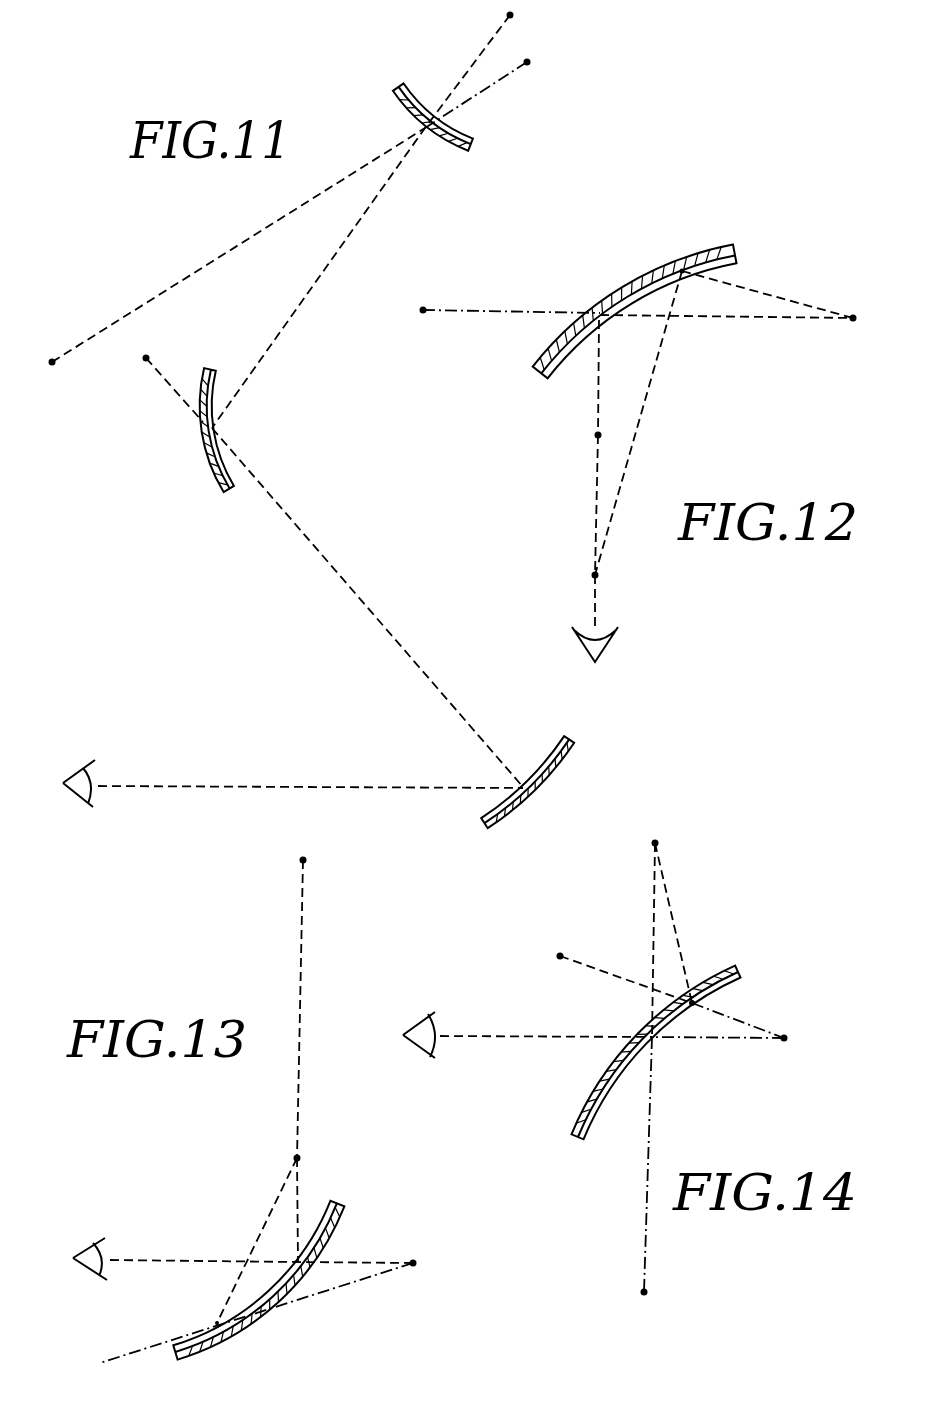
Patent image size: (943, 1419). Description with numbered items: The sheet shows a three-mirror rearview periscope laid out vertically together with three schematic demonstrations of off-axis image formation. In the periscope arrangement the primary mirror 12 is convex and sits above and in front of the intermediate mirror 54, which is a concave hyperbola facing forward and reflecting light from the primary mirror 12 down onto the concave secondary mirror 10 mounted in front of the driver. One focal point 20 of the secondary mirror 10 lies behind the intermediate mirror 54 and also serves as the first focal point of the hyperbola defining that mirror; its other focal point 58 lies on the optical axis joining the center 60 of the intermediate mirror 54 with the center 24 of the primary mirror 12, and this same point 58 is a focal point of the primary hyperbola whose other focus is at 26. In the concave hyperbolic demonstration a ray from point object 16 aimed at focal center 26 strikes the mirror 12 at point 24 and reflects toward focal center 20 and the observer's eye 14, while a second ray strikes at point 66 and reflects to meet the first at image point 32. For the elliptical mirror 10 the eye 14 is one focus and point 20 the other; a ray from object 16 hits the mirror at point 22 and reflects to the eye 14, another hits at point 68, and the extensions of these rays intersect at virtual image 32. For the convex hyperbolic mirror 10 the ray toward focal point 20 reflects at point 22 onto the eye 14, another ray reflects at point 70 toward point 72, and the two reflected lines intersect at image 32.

In FIG. 11, the secondary mirror 10 is at (558, 773).
In FIG. 13, the secondary mirror 10 is at (325, 1235).
In FIG. 14, the secondary mirror 10 is at (598, 1097).
In FIG. 11, the primary mirror 12 is at (470, 148).
In FIG. 12, the primary mirror 12 is at (542, 375).
In FIG. 11, the observer's eye 14 is at (63, 782).
In FIG. 12, the observer's eye 14 is at (603, 647).
In FIG. 13, the observer's eye 14 is at (75, 1257).
In FIG. 14, the observer's eye 14 is at (415, 1028).
In FIG. 11, the point object 16 is at (52, 362).
In FIG. 12, the point object 16 is at (847, 294).
In FIG. 13, the point object 16 is at (297, 1158).
In FIG. 14, the point object 16 is at (655, 843).
In FIG. 11, the focal point 20 is at (146, 358).
In FIG. 12, the focal point 20 is at (598, 435).
In FIG. 13, the focal point 20 is at (303, 860).
In FIG. 14, the focal point 20 is at (644, 1292).
In FIG. 11, the intersecting point 22 is at (518, 783).
In FIG. 13, the intersecting point 22 is at (302, 1265).
In FIG. 14, the intersecting point 22 is at (652, 1038).
In FIG. 11, the center of primary mirror 24 is at (420, 127).
In FIG. 12, the center of primary mirror 24 is at (600, 316).
In FIG. 11, the focal center 26 is at (527, 62).
In FIG. 12, the focal center 26 is at (423, 310).
In FIG. 12, the image point 32 is at (595, 576).
In FIG. 13, the image point 32 is at (413, 1263).
In FIG. 14, the image point 32 is at (784, 1038).
In FIG. 11, the intermediate mirror 54 is at (217, 482).
In FIG. 11, the focal point of intermediate mirror 58 is at (510, 15).
In FIG. 11, the center of intermediate mirror 60 is at (212, 428).
In FIG. 12, the point on mirror 66 is at (683, 272).
In FIG. 13, the point on mirror 68 is at (215, 1323).
In FIG. 14, the point on mirror 70 is at (692, 1003).
In FIG. 14, the reflected ray direction point 72 is at (560, 956).